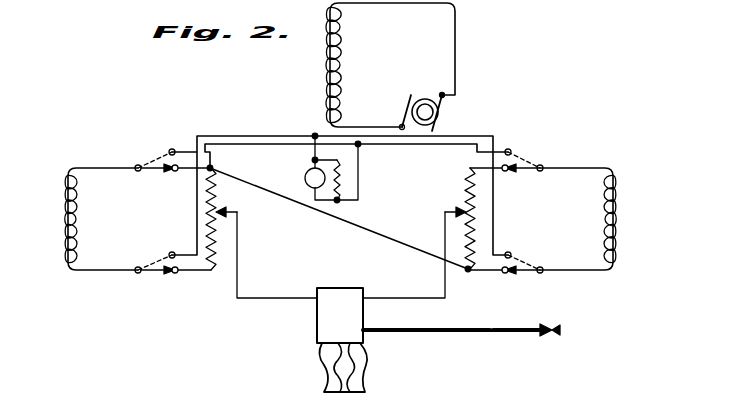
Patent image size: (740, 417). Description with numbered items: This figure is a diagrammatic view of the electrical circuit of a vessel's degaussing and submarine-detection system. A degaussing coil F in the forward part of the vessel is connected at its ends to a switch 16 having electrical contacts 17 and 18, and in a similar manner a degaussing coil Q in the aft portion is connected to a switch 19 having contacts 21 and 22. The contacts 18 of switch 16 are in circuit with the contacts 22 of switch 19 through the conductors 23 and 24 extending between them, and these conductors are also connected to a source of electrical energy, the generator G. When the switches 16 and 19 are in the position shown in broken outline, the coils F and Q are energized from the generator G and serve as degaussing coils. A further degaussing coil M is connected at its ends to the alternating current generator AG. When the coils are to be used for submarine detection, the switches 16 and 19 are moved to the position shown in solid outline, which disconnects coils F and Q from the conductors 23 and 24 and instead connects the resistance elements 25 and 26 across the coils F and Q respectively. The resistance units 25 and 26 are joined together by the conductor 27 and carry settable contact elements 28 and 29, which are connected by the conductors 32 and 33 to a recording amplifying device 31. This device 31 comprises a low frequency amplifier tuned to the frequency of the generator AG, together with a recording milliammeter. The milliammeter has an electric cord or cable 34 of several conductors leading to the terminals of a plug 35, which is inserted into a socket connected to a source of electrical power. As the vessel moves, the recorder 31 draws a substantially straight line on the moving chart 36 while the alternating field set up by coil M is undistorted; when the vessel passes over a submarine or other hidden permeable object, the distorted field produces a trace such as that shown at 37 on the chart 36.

The degaussing coil M is at (330, 72).
The alternating current generator AG is at (437, 119).
The degaussing coil F is at (85, 204).
The degaussing coil Q is at (600, 232).
The generator G is at (305, 178).
The switch 16 is at (153, 265).
The electrical contacts 17 is at (179, 178).
The electrical contacts 18 is at (171, 150).
The switch 19 is at (540, 262).
The electrical contacts 21 is at (508, 250).
The electrical contacts 22 is at (510, 150).
The conductor 23 is at (268, 136).
The conductor 24 is at (233, 146).
The resistance element 25 is at (212, 270).
The resistance element 26 is at (466, 190).
The conductor 27 is at (350, 226).
The settable contact element 28 is at (240, 207).
The settable contact element 29 is at (445, 212).
The recording amplifying device 31 is at (317, 318).
The conductor 32 is at (294, 298).
The conductor 33 is at (405, 298).
The electric cord 34 is at (491, 335).
The plug 35 is at (562, 334).
The moving chart 36 is at (368, 376).
The trace 37 is at (360, 355).